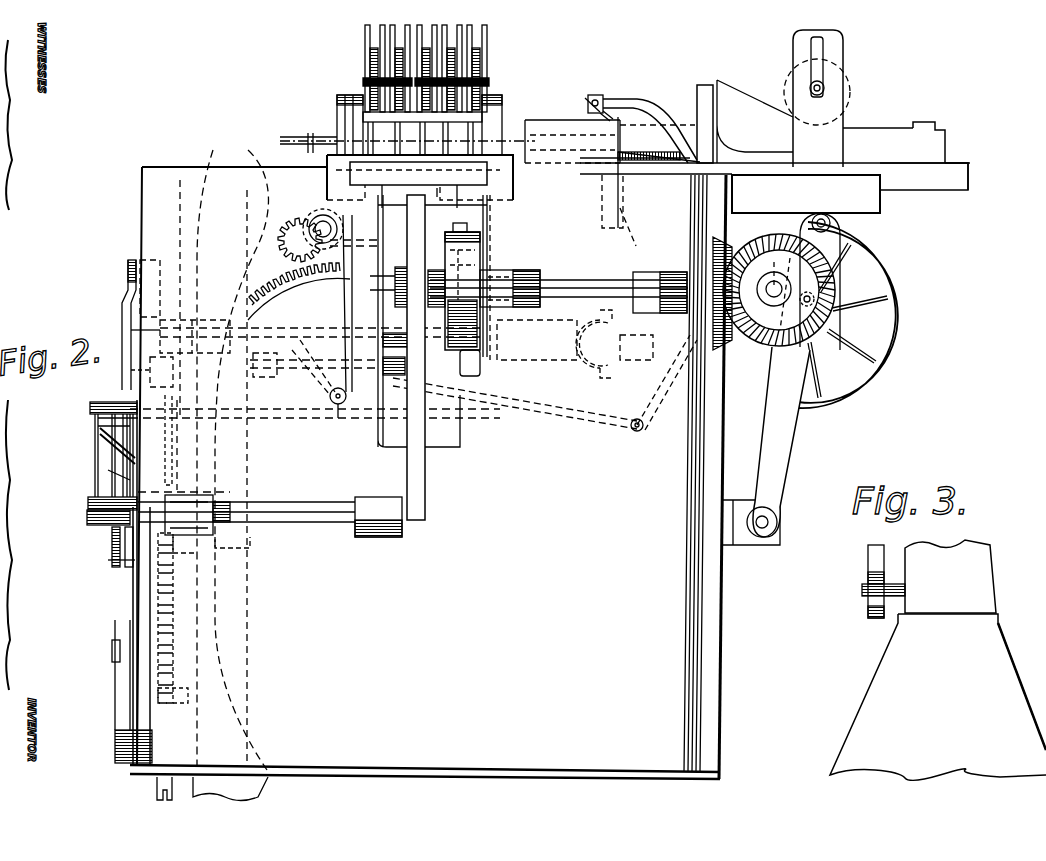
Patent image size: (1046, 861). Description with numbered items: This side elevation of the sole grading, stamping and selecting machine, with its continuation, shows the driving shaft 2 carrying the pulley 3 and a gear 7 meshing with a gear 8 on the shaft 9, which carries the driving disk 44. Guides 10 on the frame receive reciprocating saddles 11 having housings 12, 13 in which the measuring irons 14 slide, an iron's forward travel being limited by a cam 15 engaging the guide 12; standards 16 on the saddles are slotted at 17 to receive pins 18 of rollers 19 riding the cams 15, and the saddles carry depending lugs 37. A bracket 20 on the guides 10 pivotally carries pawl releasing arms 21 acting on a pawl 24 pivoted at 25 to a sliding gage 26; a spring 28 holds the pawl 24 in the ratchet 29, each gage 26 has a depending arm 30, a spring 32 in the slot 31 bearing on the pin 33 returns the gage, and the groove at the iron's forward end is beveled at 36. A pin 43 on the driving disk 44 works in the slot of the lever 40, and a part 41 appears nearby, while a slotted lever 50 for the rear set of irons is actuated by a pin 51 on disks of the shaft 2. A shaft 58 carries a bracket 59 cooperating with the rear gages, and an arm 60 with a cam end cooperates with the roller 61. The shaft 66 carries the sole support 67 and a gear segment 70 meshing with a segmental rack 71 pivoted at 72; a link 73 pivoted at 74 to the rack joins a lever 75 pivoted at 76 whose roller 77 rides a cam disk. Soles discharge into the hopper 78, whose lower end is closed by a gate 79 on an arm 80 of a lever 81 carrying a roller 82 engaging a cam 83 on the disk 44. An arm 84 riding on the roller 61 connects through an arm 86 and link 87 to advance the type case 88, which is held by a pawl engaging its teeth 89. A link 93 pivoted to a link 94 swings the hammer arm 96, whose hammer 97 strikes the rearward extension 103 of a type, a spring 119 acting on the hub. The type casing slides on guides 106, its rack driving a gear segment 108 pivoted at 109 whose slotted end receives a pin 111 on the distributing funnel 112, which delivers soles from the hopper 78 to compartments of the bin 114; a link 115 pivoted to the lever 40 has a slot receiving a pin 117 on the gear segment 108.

In FIG. 2, the driving shaft 2 is at (774, 287).
In FIG. 2, the pulley 3 is at (890, 278).
In FIG. 2, the gear 7 is at (813, 302).
In FIG. 2, the gear 8 is at (779, 283).
In FIG. 2, the shaft 9 is at (560, 283).
In FIG. 2, the guides 10 is at (328, 181).
In FIG. 2, the saddles 11 is at (960, 160).
In FIG. 2, the housing or guide 12 is at (702, 94).
In FIG. 2, the housing or guide 13 is at (380, 118).
In FIG. 2, the measuring irons 14 is at (480, 132).
In FIG. 2, the cam 15 is at (755, 121).
In FIG. 2, the standards 16 is at (481, 36).
In FIG. 2, the slot 17 is at (814, 50).
In FIG. 2, the pins 18 is at (480, 80).
In FIG. 2, the rollers 19 is at (476, 70).
In FIG. 2, the bracket 20 is at (494, 122).
In FIG. 2, the pawl releasing arms 21 is at (345, 116).
In FIG. 2, the pawl 24 is at (622, 108).
In FIG. 2, the pivot 25 is at (600, 124).
In FIG. 2, the sliding gage 26 is at (572, 143).
In FIG. 2, the spring 28 is at (590, 110).
In FIG. 2, the ratchet 29 is at (649, 142).
In FIG. 2, the depending arm 30 is at (620, 204).
In FIG. 2, the slot 31 is at (650, 150).
In FIG. 2, the spring 32 is at (632, 170).
In FIG. 2, the pin 33 is at (588, 170).
In FIG. 2, the beveled forward end 36 is at (610, 141).
In FIG. 2, the depending lugs 37 is at (441, 179).
In FIG. 2, the lever 40 is at (424, 472).
In FIG. 2, the shaft 41 is at (284, 507).
In FIG. 2, the pin or roller 43 is at (400, 278).
In FIG. 2, the driving disk 44 is at (472, 250).
In FIG. 2, the slotted lever 50 is at (790, 430).
In FIG. 2, the pin 51 is at (812, 308).
In FIG. 2, the shaft 58 is at (575, 338).
In FIG. 2, the bracket 59 is at (627, 224).
In FIG. 2, the arm 60 is at (160, 357).
In FIG. 2, the roller 61 is at (150, 370).
In FIG. 2, the shaft 66 is at (318, 224).
In FIG. 2, the support 67 is at (312, 138).
In FIG. 2, the gear segment 70 is at (292, 240).
In FIG. 2, the segmental rack 71 is at (274, 284).
In FIG. 2, the pivot 72 is at (338, 408).
In FIG. 2, the link 73 is at (598, 428).
In FIG. 2, the pivot 74 is at (310, 368).
In FIG. 2, the lever 75 is at (645, 400).
In FIG. 2, the pivot 76 is at (700, 358).
In FIG. 2, the roller 77 is at (685, 276).
In FIG. 2, the hopper or discharge conduit 78 is at (240, 154).
In FIG. 2, the valve or gate 79 is at (220, 548).
In FIG. 2, the arm 80 is at (250, 472).
In FIG. 2, the lever 81 is at (474, 362).
In FIG. 2, the roller 82 is at (470, 268).
In FIG. 2, the cam 83 is at (465, 228).
In FIG. 2, the arm 84 is at (150, 330).
In FIG. 2, the arm 86 is at (126, 312).
In FIG. 2, the link 87 is at (110, 550).
In FIG. 2, the type case 88 is at (148, 582).
In FIG. 2, the steps or teeth 89 is at (128, 442).
In FIG. 2, the link 93 is at (90, 408).
In FIG. 2, the link 94 is at (91, 428).
In FIG. 2, the hammer arm 96 is at (88, 499).
In FIG. 2, the hammer 97 is at (118, 492).
In FIG. 2, the rearward extension 103 is at (88, 516).
In FIG. 2, the guides 106 is at (190, 548).
In FIG. 2, the gear segment 108 is at (152, 792).
In FIG. 3, the gear segment 108 is at (868, 558).
In FIG. 2, the pivot 109 is at (160, 692).
In FIG. 3, the pin 111 is at (862, 590).
In FIG. 2, the distributing funnel 112 is at (250, 789).
In FIG. 3, the distributing funnel 112 is at (950, 576).
In FIG. 3, the bin 114 is at (938, 697).
In FIG. 2, the link 115 is at (130, 704).
In FIG. 2, the pin 117 is at (114, 650).
In FIG. 2, the spring 119 is at (120, 452).